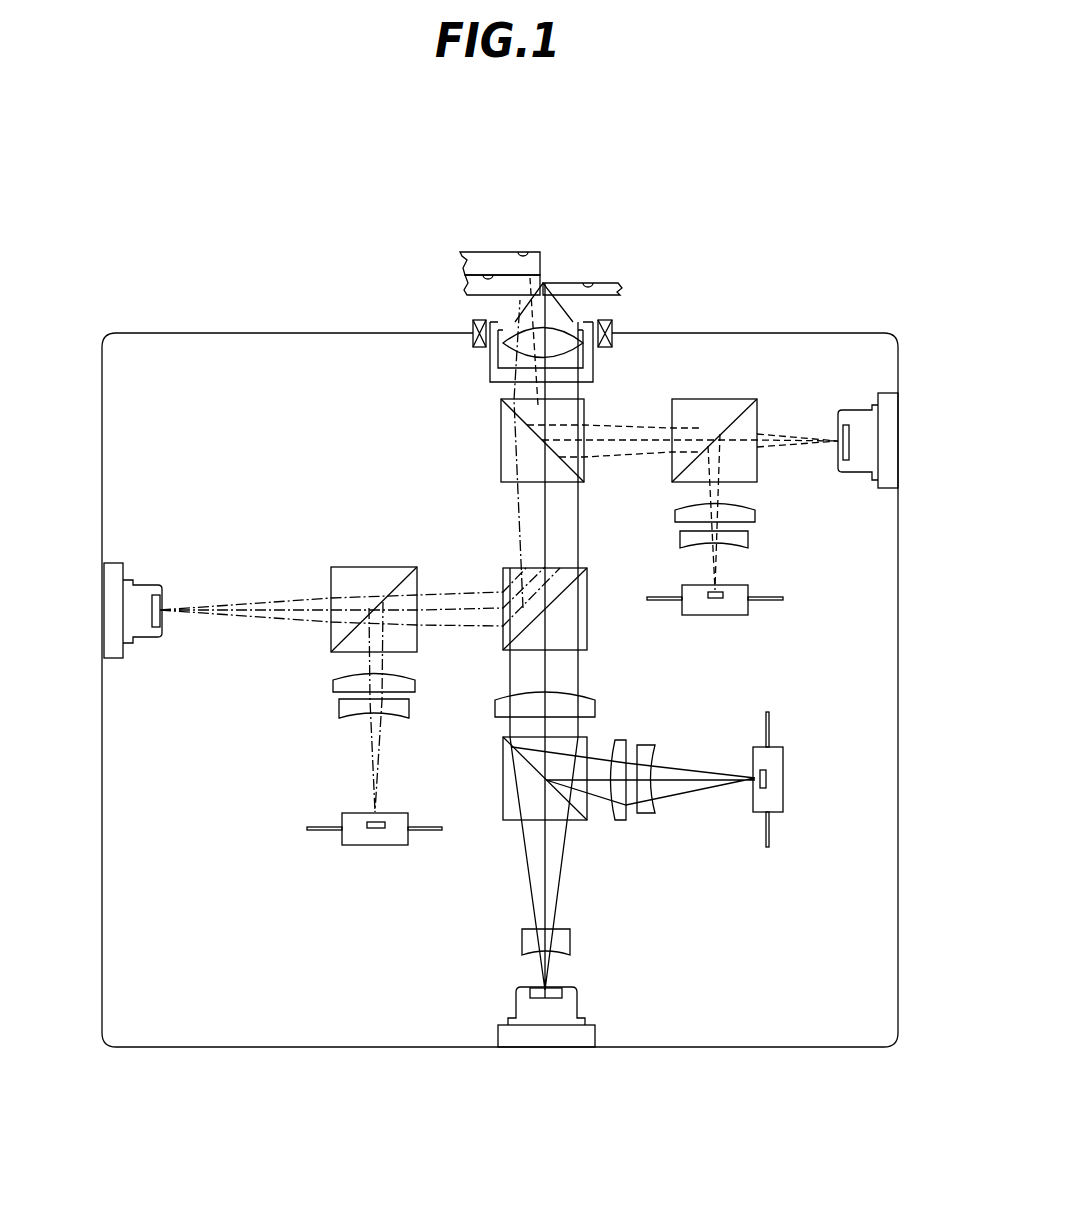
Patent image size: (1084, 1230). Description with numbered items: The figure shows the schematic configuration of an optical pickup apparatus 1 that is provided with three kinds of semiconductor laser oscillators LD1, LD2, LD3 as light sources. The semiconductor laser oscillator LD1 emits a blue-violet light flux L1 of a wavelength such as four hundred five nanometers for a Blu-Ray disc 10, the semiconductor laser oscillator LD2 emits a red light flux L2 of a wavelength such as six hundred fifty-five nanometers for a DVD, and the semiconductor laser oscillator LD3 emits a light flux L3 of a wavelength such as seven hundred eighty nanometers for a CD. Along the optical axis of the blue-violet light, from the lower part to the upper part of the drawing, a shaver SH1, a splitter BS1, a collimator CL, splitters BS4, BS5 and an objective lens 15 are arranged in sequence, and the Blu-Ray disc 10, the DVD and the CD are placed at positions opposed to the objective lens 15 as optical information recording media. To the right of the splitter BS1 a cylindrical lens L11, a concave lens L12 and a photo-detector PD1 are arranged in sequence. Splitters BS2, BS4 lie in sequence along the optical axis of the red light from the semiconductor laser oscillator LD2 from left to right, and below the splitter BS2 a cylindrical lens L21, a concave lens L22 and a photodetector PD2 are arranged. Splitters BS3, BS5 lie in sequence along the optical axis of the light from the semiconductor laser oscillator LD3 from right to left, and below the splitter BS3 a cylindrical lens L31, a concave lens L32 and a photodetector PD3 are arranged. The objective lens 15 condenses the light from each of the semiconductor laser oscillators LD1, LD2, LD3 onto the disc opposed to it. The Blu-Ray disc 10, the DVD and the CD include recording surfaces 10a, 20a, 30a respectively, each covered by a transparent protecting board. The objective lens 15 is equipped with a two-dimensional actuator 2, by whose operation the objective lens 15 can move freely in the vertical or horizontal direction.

The optical pickup apparatus 1 is at (824, 329).
The two-dimensional actuator 2 is at (470, 322).
The Blu-Ray disc (BD) 10 is at (613, 288).
The recording surface 10a is at (583, 282).
The recording surface 20a is at (483, 273).
The recording surface 30a is at (520, 252).
The objective lens 15 is at (478, 360).
The splitter BS1 is at (512, 822).
The splitter BS2 is at (363, 567).
The splitter BS3 is at (745, 398).
The splitter BS4 is at (588, 607).
The splitter BS5 is at (500, 453).
The collimator CL is at (497, 710).
The shaver SH1 is at (567, 945).
The light flux L1 is at (560, 890).
The light flux L2 is at (453, 592).
The light flux L3 is at (622, 455).
The cylindrical lens L11 is at (622, 738).
The concave lens L12 is at (650, 747).
The cylindrical lens L21 is at (335, 682).
The concave lens L22 is at (339, 710).
The cylindrical lens L31 is at (752, 513).
The concave lens L32 is at (743, 537).
The semiconductor laser oscillator LD1 is at (570, 1012).
The semiconductor laser oscillator LD2 is at (138, 590).
The semiconductor laser oscillator LD3 is at (859, 463).
The photo-detector PD1 is at (775, 790).
The photodetector PD2 is at (373, 840).
The photodetector PD3 is at (715, 607).